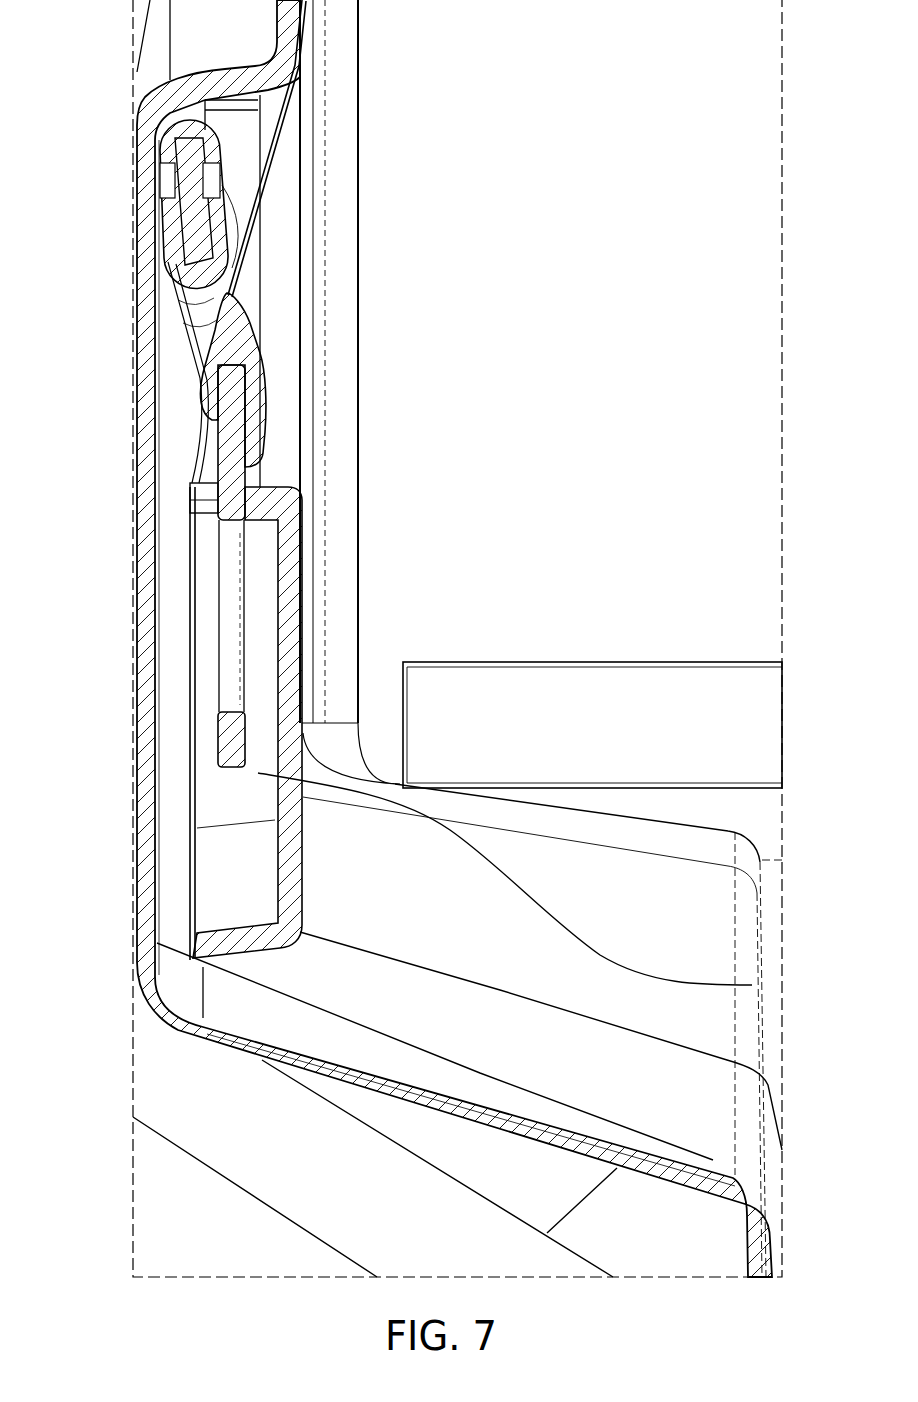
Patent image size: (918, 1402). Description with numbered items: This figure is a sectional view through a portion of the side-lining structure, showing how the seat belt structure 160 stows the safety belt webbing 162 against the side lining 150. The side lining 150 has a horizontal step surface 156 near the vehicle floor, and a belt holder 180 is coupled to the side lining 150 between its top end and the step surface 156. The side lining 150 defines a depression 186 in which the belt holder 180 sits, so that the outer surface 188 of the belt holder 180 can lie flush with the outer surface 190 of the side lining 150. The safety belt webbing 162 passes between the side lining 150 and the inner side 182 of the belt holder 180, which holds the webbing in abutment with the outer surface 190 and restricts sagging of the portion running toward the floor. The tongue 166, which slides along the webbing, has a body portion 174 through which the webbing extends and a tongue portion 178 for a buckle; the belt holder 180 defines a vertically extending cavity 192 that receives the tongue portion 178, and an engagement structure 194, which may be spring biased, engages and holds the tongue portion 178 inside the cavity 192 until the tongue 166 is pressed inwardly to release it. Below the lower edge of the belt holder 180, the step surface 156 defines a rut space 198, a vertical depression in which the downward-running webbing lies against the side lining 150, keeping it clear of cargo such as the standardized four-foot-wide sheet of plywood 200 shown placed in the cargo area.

The side lining 150 is at (272, 71).
The step surface 156 is at (587, 1071).
The seat belt structure 160 is at (260, 190).
The safety belt webbing 162 is at (263, 200).
The tongue 166 is at (207, 472).
The body portion 174 is at (230, 424).
The tongue portion 178 is at (230, 737).
The belt holder 180 is at (290, 528).
The inner side 182 is at (192, 497).
The depression 186 is at (237, 135).
The outer surface of belt holder 188 is at (296, 590).
The outer surface of side lining 190 is at (313, 0).
The cavity 192 is at (257, 533).
The engagement structure 194 is at (752, 985).
The rut space 198 is at (257, 1013).
The plywood 200 is at (585, 712).